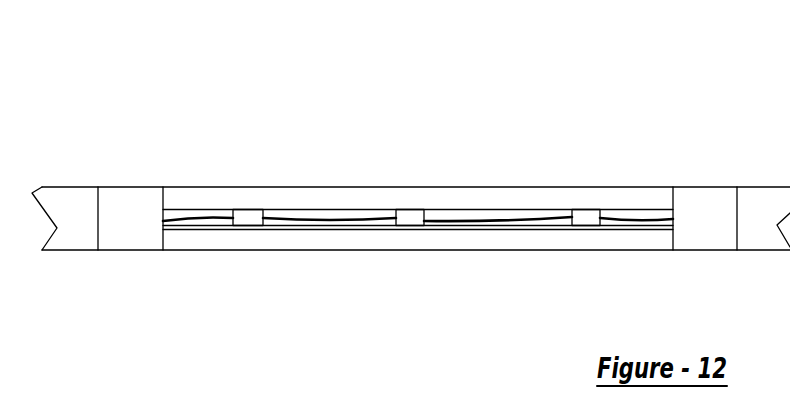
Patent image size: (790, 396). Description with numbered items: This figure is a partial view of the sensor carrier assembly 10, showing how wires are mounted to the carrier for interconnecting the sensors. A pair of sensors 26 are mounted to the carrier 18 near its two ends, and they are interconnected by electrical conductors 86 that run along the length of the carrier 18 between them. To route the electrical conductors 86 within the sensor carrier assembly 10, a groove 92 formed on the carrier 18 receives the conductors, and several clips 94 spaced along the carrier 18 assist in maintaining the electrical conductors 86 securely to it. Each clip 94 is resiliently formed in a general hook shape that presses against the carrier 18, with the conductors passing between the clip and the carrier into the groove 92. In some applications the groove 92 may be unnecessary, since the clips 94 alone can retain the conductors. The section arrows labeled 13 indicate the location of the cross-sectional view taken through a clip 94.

The sensor carrier assembly 10 is at (693, 122).
The section line 13- 13 is at (433, 93).
The carrier 18 is at (80, 187).
The sensor 26 is at (131, 246).
The electrical conductor 86 is at (203, 219).
The groove 92 is at (492, 210).
The clip 94 is at (411, 212).